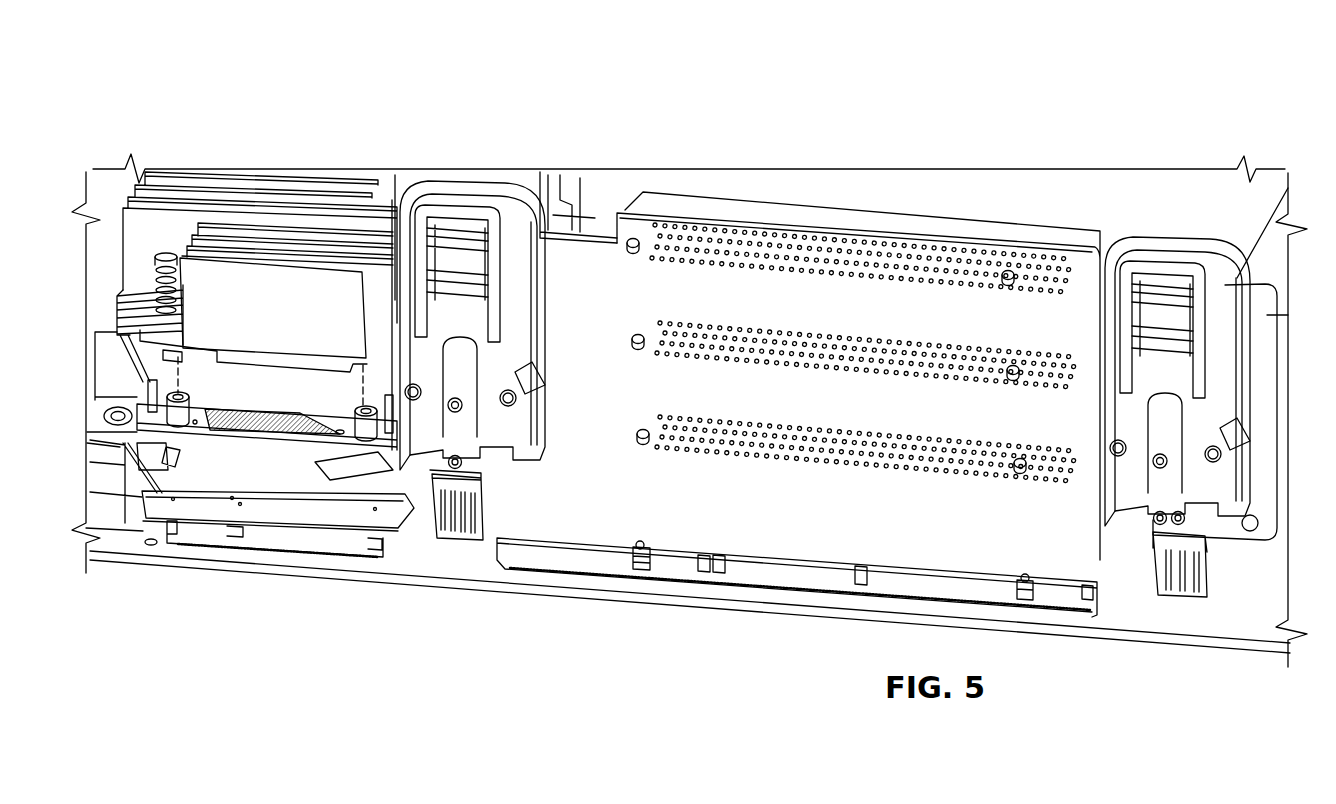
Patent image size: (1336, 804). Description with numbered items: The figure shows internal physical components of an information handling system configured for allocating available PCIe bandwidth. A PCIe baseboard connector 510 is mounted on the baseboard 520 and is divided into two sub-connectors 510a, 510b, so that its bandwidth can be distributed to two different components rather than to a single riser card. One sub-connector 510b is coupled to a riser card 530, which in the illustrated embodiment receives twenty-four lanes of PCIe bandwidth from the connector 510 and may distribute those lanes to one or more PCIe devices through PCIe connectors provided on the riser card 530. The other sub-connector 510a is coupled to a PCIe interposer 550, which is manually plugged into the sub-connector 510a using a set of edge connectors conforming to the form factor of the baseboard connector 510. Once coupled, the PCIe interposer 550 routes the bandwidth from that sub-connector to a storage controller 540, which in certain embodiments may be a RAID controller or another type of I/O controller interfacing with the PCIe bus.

The PCIe baseboard connector 510 is at (632, 594).
The sub-connector 510a is at (268, 538).
The sub-connector 510b is at (677, 570).
The baseboard 520 is at (1150, 620).
The riser card 530 is at (905, 300).
The storage controller 540 is at (263, 287).
The PCIe interposer 550 is at (153, 498).